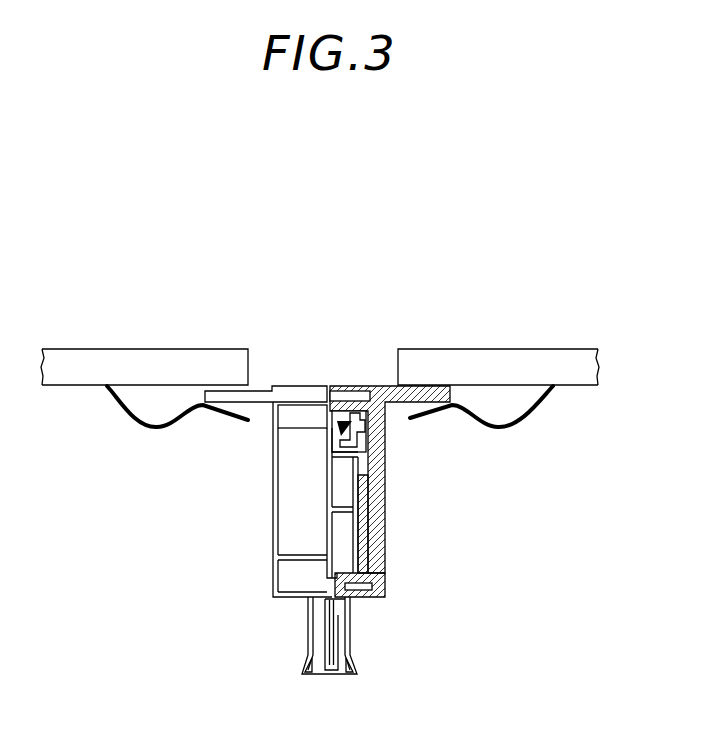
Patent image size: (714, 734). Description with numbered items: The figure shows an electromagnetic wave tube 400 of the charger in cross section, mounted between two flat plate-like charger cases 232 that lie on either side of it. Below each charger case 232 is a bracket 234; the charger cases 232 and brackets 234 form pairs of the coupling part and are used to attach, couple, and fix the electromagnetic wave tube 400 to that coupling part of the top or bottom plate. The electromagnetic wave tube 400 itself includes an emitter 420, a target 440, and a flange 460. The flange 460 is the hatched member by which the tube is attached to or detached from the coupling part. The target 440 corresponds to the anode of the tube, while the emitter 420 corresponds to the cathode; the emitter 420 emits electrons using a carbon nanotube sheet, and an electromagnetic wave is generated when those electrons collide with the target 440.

The charger case 232 is at (98, 357).
The bracket 234 is at (130, 424).
The electromagnetic wave tube 400 is at (340, 268).
The emitter 420 is at (350, 429).
The target 440 is at (350, 387).
The flange 460 is at (375, 378).